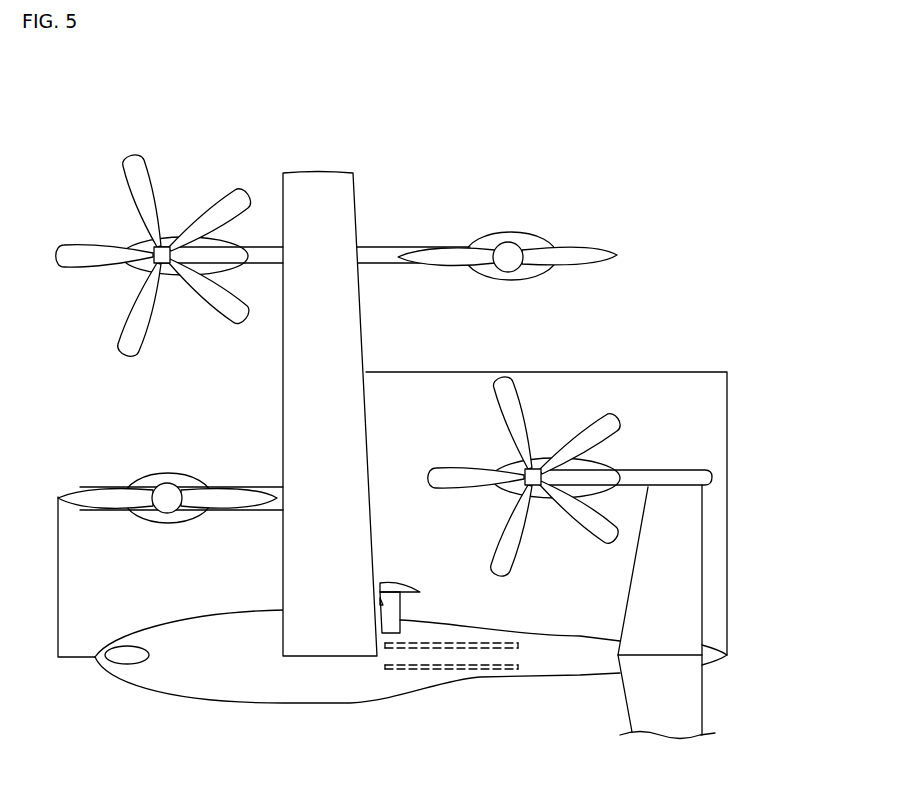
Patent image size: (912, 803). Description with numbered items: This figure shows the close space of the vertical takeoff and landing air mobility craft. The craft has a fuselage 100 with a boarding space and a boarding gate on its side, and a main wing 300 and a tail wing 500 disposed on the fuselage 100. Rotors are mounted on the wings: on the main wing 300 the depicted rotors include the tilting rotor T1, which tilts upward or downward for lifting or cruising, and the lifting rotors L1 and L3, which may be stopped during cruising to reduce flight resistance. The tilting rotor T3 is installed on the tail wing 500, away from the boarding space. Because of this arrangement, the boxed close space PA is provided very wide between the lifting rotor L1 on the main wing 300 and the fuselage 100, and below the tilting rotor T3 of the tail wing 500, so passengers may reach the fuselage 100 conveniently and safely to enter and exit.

The fuselage 100 is at (188, 687).
The main wing 300 is at (322, 183).
The tail wing 500 is at (685, 582).
The close space PA is at (718, 418).
The tilting rotor T1 is at (135, 173).
The tilting rotor T3 is at (612, 420).
The lifting rotor L1 is at (80, 493).
The lifting rotor L3 is at (598, 252).